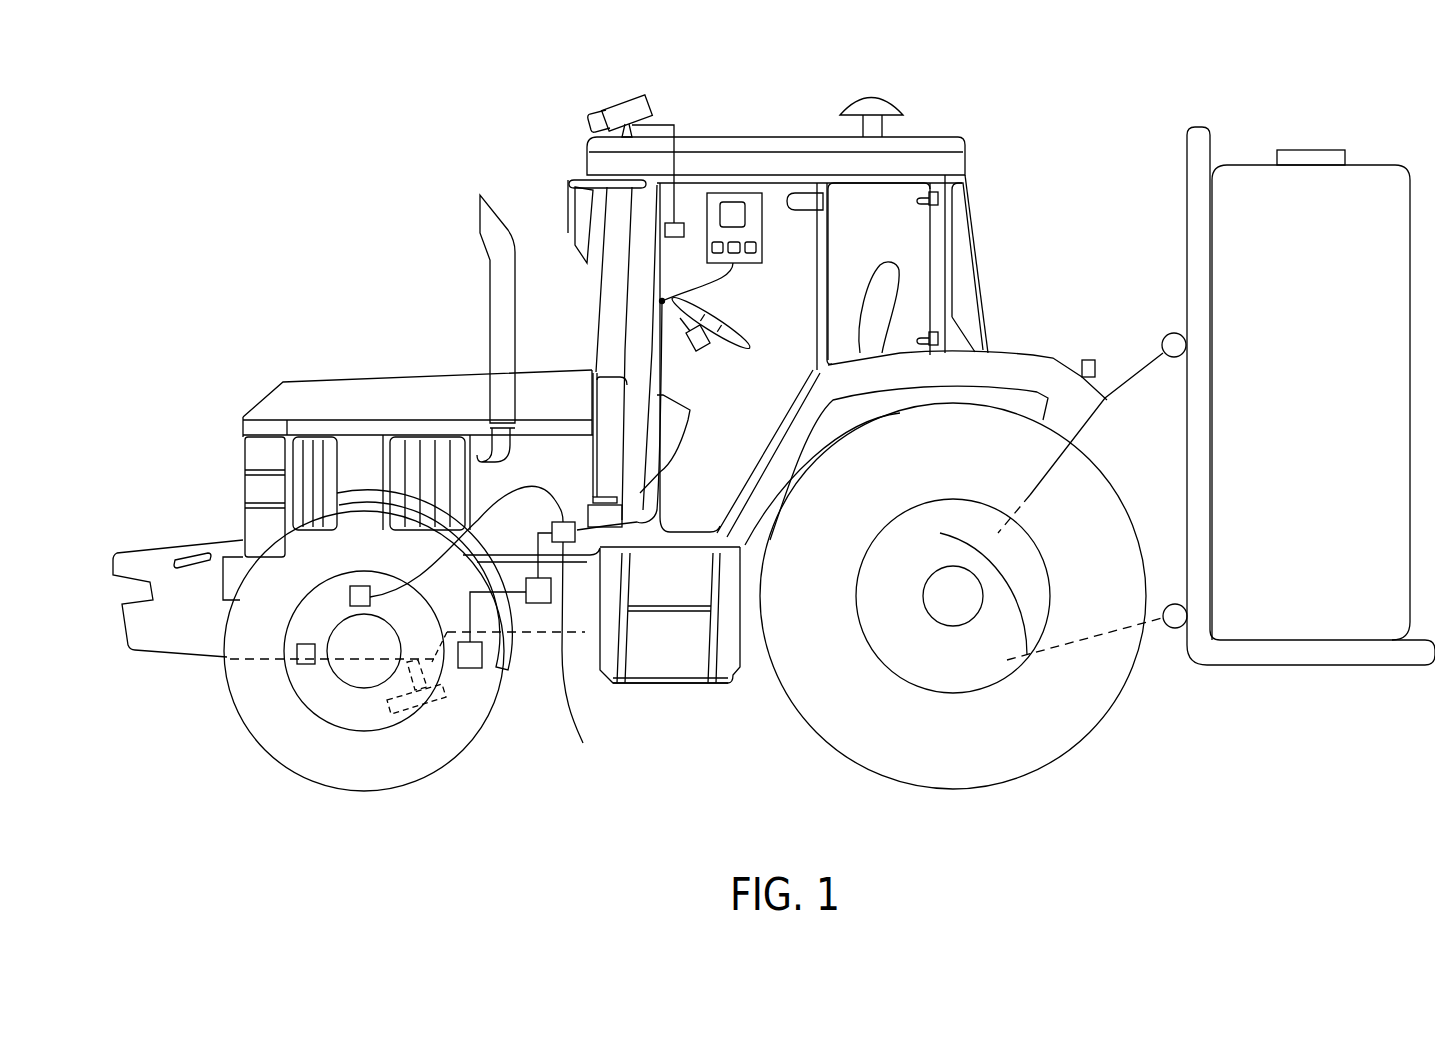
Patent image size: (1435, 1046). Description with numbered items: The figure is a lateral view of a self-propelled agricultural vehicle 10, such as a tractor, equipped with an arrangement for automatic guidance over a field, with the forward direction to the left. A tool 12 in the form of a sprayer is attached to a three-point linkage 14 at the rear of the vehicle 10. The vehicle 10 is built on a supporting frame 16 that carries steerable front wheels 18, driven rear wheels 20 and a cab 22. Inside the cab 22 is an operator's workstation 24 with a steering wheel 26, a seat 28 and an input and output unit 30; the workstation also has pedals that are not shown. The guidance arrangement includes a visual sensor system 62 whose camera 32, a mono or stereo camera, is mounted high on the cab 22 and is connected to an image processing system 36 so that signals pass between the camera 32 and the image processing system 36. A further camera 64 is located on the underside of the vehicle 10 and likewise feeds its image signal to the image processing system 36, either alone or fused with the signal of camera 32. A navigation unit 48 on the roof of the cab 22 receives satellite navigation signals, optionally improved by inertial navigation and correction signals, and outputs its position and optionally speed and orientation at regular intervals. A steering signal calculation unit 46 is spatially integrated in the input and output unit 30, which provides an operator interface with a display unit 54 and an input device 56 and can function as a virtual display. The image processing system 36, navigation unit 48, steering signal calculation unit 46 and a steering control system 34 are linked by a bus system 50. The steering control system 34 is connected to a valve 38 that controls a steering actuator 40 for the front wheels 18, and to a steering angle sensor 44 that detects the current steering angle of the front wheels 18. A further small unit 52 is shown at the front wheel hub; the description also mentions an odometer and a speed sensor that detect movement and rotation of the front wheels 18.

The agricultural vehicle 10 is at (530, 97).
The tool 12 is at (1258, 105).
The three-point linkage 14 is at (1025, 505).
The supporting frame 16 is at (660, 673).
The front wheels 18 is at (343, 768).
The rear wheels 20 is at (960, 768).
The cab 22 is at (787, 165).
The operator's workstation 24 is at (790, 310).
The steering wheel 26 is at (727, 340).
The seat 28 is at (880, 290).
The input and output unit 30 is at (753, 202).
The camera 32 is at (630, 103).
The steering control system 34 is at (583, 649).
The image processing system 36 is at (680, 223).
The valve 38 is at (537, 603).
The steering actuator 40 is at (468, 668).
The steering angle sensor 44 is at (352, 588).
The steering signal calculation unit 46 is at (757, 247).
The navigation unit 48 is at (870, 105).
The bus system 50 is at (657, 348).
The wheel sensor 52 is at (297, 660).
The display unit 54 is at (730, 202).
The input device 56 is at (710, 246).
The visual sensor system 62 is at (610, 123).
The further camera 64 is at (420, 712).